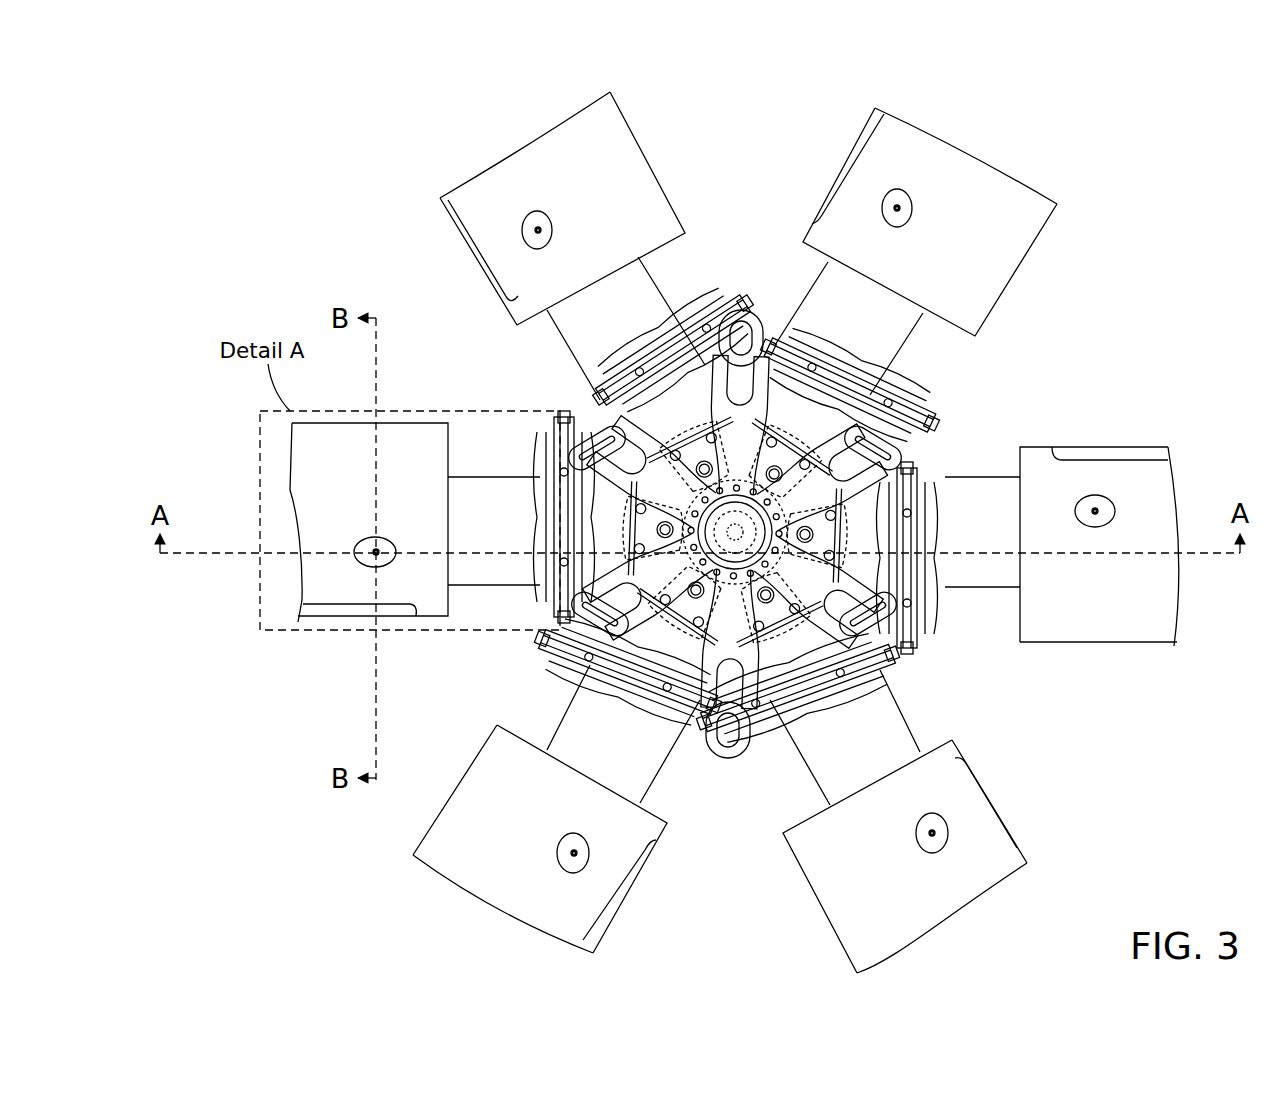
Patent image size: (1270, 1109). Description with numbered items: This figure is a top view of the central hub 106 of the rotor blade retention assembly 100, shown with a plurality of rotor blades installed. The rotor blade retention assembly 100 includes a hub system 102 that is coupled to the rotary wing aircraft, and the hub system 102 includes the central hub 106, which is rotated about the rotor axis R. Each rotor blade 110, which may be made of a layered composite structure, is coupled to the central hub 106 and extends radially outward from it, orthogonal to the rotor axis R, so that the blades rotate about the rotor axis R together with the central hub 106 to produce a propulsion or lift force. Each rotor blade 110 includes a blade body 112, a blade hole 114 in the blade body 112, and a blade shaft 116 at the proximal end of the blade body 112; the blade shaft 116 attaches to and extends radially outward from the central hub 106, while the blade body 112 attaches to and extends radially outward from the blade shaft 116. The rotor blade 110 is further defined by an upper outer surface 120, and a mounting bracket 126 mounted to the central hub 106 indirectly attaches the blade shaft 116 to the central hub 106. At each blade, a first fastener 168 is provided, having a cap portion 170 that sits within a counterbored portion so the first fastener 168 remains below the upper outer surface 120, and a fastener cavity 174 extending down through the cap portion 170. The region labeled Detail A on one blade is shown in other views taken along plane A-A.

The rotor blade retention assembly 100 is at (322, 100).
The hub system 102 is at (367, 268).
The central hub 106 is at (690, 405).
The rotor blade 110 is at (527, 112).
The blade body 112 is at (650, 178).
The blade hole 114 is at (536, 224).
The blade shaft 116 is at (560, 330).
The upper outer surface 120 is at (630, 138).
The mounting bracket 126 is at (545, 440).
The first fastener 168 is at (510, 218).
The cap portion 170 is at (528, 232).
The fastener cavity 174 is at (535, 238).
The rotor axis R is at (737, 540).